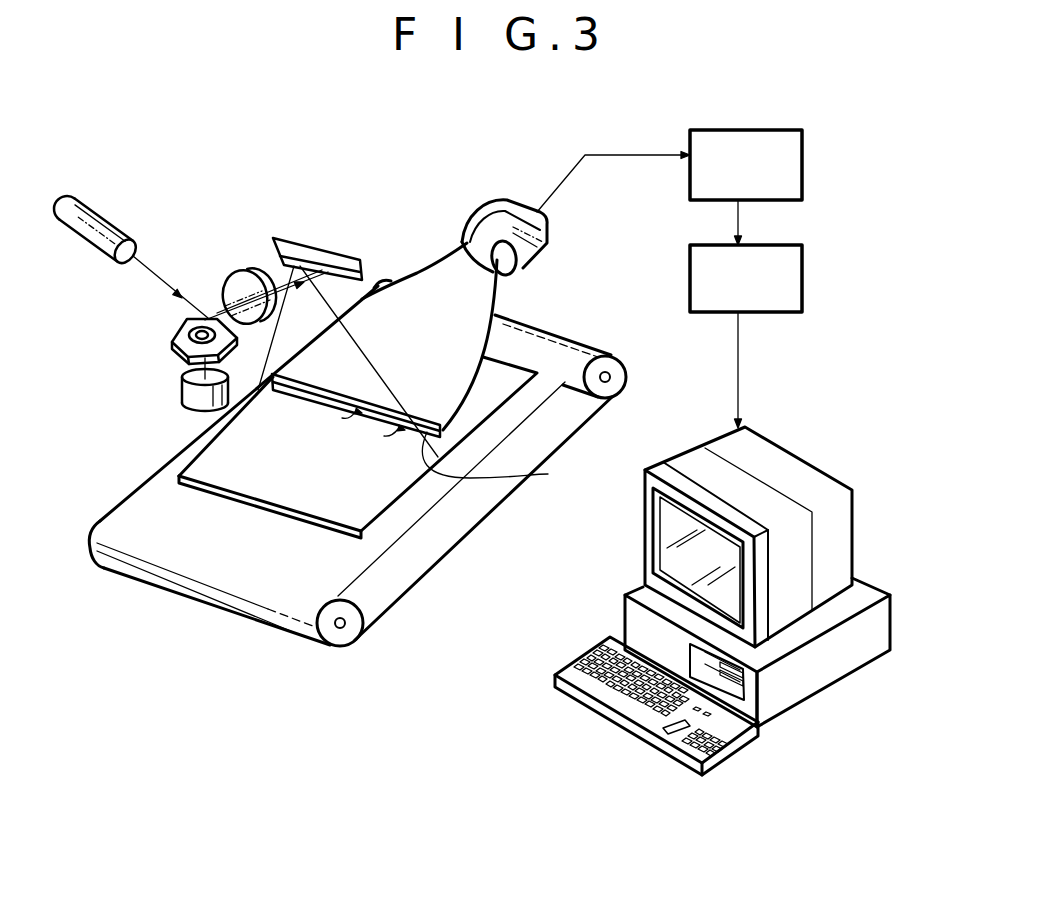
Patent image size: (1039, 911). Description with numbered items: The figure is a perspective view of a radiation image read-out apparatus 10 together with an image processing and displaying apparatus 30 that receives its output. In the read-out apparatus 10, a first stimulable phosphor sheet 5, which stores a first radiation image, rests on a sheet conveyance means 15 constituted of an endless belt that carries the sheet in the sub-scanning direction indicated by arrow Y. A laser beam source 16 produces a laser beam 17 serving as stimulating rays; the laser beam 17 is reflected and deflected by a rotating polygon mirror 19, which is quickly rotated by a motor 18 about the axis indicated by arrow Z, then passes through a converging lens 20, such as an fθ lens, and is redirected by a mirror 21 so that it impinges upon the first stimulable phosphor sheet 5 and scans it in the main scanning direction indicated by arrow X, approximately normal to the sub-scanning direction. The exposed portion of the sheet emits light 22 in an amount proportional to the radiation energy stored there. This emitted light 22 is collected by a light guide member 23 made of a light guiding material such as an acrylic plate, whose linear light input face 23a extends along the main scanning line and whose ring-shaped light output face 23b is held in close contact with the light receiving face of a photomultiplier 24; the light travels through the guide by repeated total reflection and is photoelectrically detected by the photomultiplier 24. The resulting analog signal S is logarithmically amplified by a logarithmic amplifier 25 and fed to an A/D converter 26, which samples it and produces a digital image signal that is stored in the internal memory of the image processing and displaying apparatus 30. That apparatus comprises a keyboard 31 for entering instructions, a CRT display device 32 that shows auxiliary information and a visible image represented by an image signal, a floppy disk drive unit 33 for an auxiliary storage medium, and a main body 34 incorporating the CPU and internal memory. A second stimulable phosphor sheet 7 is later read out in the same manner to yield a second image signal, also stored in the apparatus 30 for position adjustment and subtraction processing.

The first stimulable phosphor sheet 5 is at (361, 454).
The second stimulable phosphor sheet 7 is at (387, 495).
The radiation image read-out apparatus 10 is at (289, 192).
The sheet conveyance means 15 is at (353, 558).
The laser beam source 16 is at (103, 210).
The laser beam 17 is at (165, 277).
The motor 18 is at (182, 400).
The rotating polygon mirror 19 is at (195, 329).
The converging lens 20 is at (235, 270).
The mirror 21 is at (332, 248).
The emitted light 22 is at (302, 394).
The light guide member 23 is at (484, 359).
The linear light input face 23a is at (548, 478).
The ring-shaped light output face 23b is at (510, 279).
The photomultiplier 24 is at (531, 234).
The logarithmic amplifier 25 is at (805, 153).
The A/D converter 26 is at (805, 282).
The image processing and displaying apparatus 30 is at (725, 592).
The keyboard 31 is at (733, 723).
The CRT display device 32 is at (700, 576).
The floppy disk drive unit 33 is at (760, 672).
The main body 34 is at (764, 637).
The analog signal S is at (627, 152).